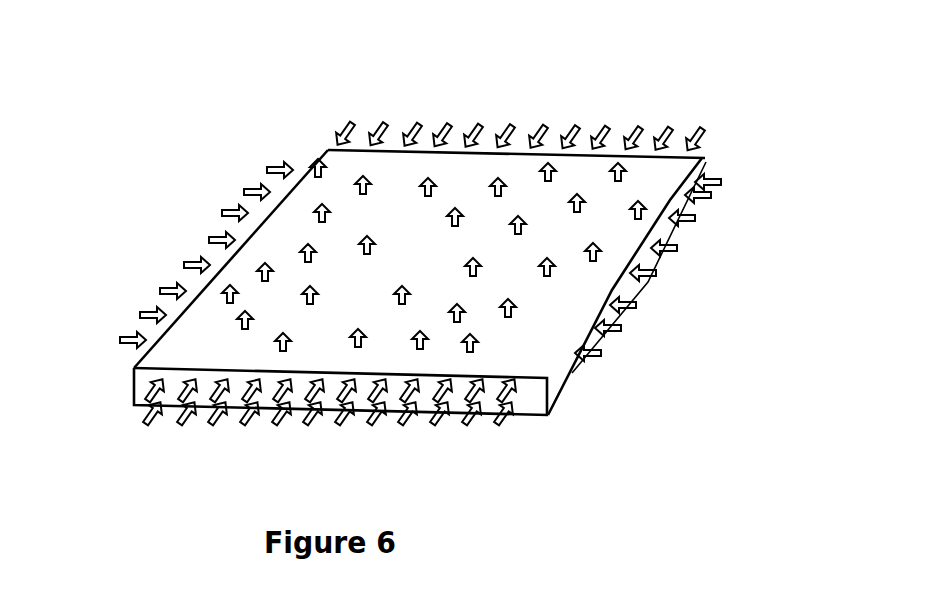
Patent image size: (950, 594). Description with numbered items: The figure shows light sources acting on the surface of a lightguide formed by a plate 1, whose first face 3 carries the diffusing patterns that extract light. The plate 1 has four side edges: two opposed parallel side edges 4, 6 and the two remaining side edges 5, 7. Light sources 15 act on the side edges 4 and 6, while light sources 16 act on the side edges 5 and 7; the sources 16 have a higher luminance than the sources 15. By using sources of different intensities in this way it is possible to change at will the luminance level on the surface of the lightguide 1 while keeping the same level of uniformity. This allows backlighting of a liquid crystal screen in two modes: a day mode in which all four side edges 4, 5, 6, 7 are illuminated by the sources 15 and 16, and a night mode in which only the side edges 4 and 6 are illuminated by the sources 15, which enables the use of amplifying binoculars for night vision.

The plate 1 is at (555, 378).
The first face 3 is at (538, 338).
The side edge 4 is at (572, 374).
The side edge 5 is at (482, 150).
The side edge 6 is at (162, 332).
The side edge 7 is at (138, 388).
The sources 15 is at (712, 194).
The sources 16 is at (598, 152).